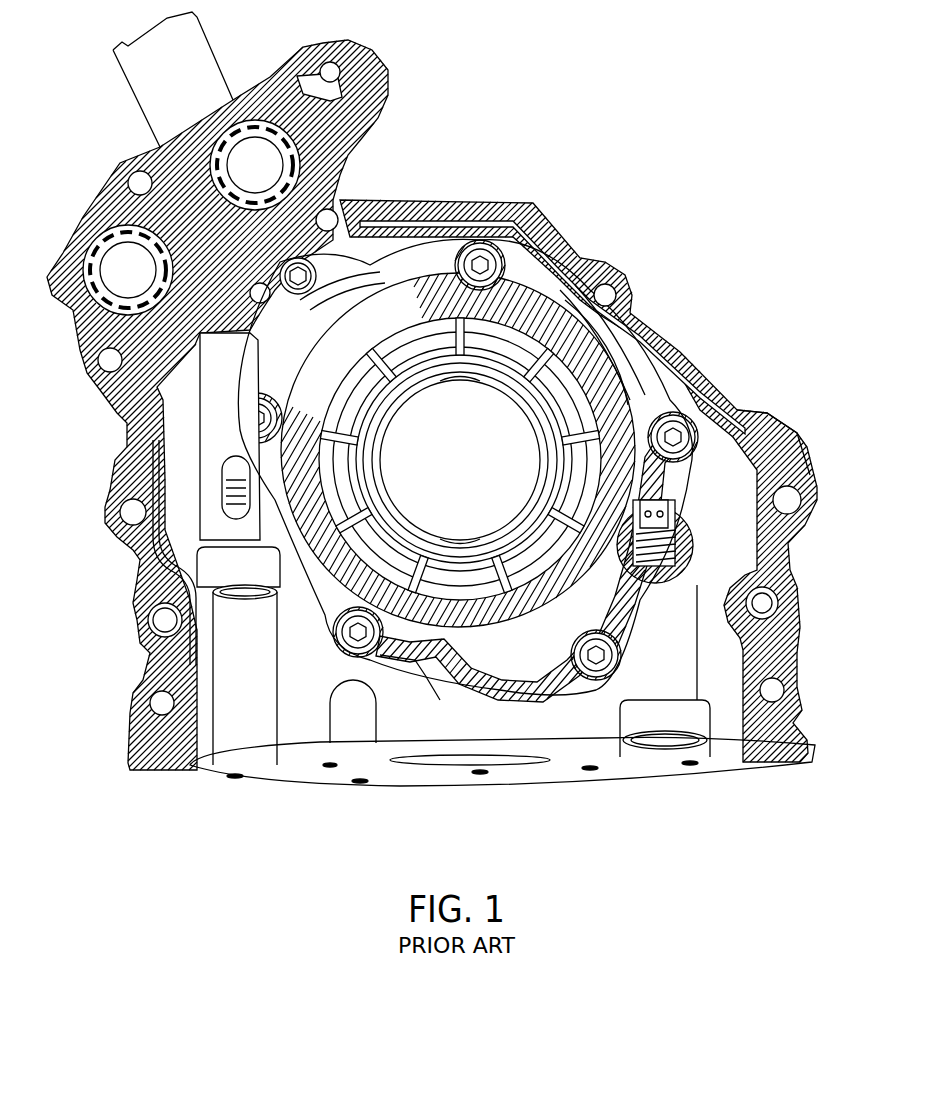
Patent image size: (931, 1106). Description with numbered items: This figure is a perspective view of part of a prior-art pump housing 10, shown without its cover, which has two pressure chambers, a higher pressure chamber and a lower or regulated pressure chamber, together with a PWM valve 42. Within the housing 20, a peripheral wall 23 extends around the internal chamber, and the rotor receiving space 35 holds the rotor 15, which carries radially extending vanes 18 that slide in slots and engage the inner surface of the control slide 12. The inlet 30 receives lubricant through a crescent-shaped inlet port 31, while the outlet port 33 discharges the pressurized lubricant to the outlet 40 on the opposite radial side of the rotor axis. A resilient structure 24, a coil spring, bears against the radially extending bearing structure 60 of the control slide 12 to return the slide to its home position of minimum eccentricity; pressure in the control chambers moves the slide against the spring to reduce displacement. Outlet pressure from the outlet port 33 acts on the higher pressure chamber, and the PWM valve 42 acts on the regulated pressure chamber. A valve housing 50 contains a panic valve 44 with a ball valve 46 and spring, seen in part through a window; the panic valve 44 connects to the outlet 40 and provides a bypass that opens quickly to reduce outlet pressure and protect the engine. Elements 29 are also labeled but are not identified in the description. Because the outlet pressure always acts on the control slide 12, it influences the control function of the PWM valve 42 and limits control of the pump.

The pump housing 10 is at (672, 226).
The control slide 12 is at (650, 382).
The rotor 15 is at (545, 545).
The vane 18 is at (612, 398).
The housing 20 is at (772, 408).
The peripheral wall 23 is at (148, 615).
The resilient structure 24 is at (680, 540).
The bolt holes 29 is at (603, 292).
The inlet 30 is at (477, 770).
The inlet port 31 is at (613, 475).
The outlet port 33 is at (402, 342).
The rotor receiving space 35 is at (475, 478).
The outlet 40 is at (112, 272).
The PWM valve 42 is at (192, 42).
The panic valve 44 is at (222, 489).
The ball valve 46 is at (234, 466).
The valve housing 50 is at (280, 714).
The bearing structure 60 is at (667, 520).